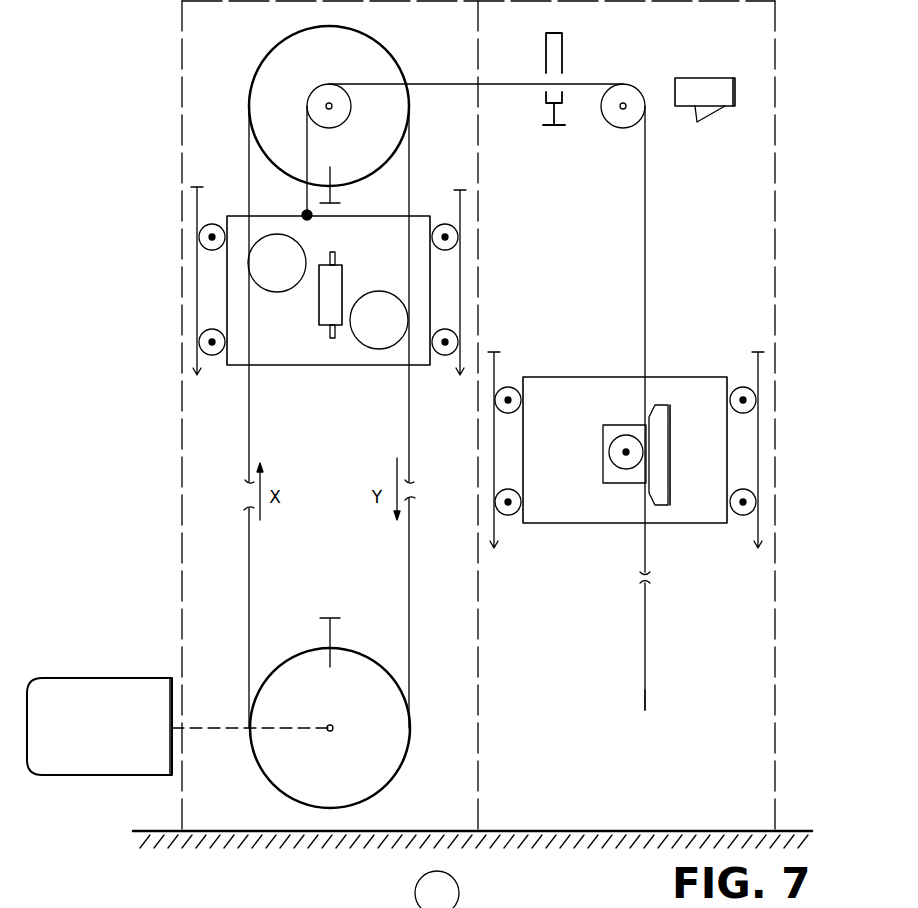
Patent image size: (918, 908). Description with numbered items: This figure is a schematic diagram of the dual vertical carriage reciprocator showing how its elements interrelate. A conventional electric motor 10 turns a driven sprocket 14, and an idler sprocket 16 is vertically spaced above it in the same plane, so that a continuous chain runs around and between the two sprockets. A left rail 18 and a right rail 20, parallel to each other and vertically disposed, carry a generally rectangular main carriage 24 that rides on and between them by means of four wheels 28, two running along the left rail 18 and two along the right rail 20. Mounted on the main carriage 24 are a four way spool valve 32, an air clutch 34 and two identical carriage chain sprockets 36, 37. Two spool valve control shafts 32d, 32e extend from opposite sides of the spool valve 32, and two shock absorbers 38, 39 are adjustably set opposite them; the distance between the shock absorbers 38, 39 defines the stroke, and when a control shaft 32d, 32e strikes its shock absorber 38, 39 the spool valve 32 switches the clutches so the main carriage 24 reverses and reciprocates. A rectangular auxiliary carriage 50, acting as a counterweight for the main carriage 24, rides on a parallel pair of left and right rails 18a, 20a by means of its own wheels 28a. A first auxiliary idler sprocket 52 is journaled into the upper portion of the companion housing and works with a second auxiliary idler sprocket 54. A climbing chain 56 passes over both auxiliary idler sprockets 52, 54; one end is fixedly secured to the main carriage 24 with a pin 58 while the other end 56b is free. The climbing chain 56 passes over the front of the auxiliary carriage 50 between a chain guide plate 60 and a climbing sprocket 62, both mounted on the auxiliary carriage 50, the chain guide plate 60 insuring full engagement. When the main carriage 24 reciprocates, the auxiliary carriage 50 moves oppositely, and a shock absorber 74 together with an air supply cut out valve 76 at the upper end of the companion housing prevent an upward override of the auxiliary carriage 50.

The electric motor 10 is at (180, 726).
The driven sprocket 14 is at (395, 776).
The idler sprocket 16 is at (268, 72).
The left rail 18 is at (460, 290).
The left rail of auxiliary carriage 18a is at (758, 450).
The right rail 20 is at (197, 306).
The right rail of auxiliary carriage 20a is at (494, 448).
The main carriage 24 is at (340, 366).
The wheel 28 is at (211, 224).
The wheel of auxiliary carriage 28a is at (508, 387).
The four way spool valve 32 is at (327, 304).
The spool valve control shaft 32d is at (336, 259).
The spool valve control shaft 32e is at (333, 333).
The air clutch 34 is at (437, 889).
The carriage chain sprocket 36 is at (277, 263).
The carriage chain sprocket 37 is at (379, 320).
The shock absorber 38 is at (338, 192).
The shock absorber 39 is at (334, 639).
The auxiliary carriage 50 is at (584, 377).
The first auxiliary idler sprocket 52 is at (623, 97).
The second auxiliary idler sprocket 54 is at (327, 105).
The climbing chain 56 is at (645, 200).
The free end of climbing chain 56b is at (645, 710).
The pin 58 is at (311, 218).
The chain guide plate 60 is at (664, 460).
The climbing sprocket 62 is at (612, 451).
The shock absorber 74 is at (557, 51).
The air supply cut out valve 76 is at (708, 88).